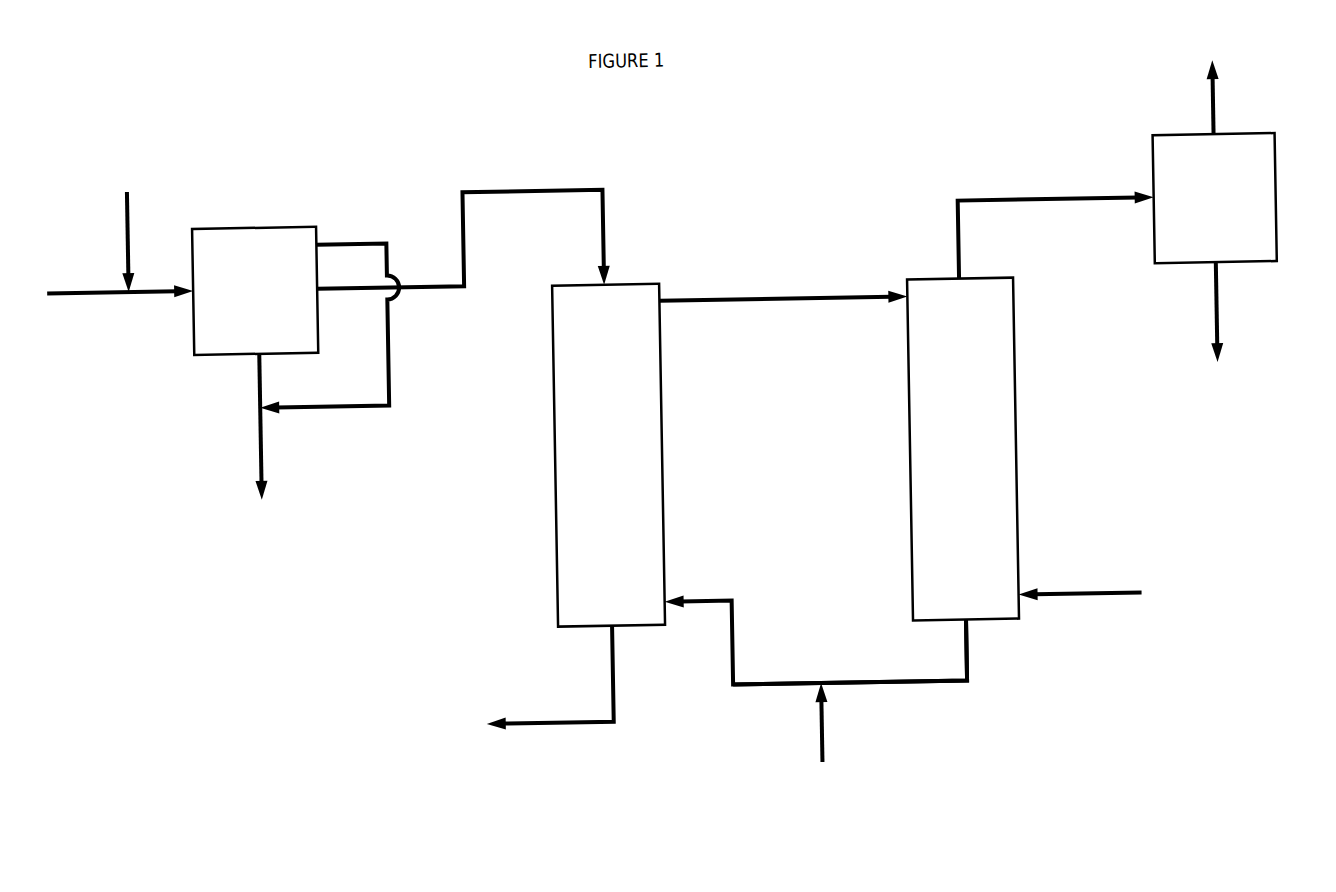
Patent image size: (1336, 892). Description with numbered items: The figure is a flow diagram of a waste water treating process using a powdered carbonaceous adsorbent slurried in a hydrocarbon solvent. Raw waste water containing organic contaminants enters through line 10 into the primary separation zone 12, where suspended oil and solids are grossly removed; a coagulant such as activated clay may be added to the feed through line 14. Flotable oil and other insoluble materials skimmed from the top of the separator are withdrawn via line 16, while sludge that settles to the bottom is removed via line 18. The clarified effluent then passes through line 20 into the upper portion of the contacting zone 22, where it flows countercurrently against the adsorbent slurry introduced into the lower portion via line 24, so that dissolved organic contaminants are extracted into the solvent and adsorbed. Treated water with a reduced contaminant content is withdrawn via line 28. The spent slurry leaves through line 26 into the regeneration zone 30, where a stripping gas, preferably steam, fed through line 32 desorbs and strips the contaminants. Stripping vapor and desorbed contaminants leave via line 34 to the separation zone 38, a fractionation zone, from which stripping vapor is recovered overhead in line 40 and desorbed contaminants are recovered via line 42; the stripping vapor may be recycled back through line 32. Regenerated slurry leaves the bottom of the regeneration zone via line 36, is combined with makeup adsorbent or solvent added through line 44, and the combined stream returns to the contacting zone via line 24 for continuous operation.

The line 10 is at (73, 284).
The primary separation zone 12 is at (234, 221).
The line 14 is at (133, 212).
The line 16 is at (354, 239).
The line 18 is at (262, 458).
The line 20 is at (486, 189).
The contacting zone 22 is at (554, 422).
The line 24 is at (720, 601).
The line 26 is at (778, 300).
The line 28 is at (551, 722).
The regeneration zone 30 is at (1017, 369).
The line 32 is at (1062, 600).
The line 34 is at (1057, 205).
The line 36 is at (919, 687).
The separation zone 38 is at (1280, 194).
The line 40 is at (1223, 118).
The line 42 is at (1222, 323).
The line 44 is at (819, 753).